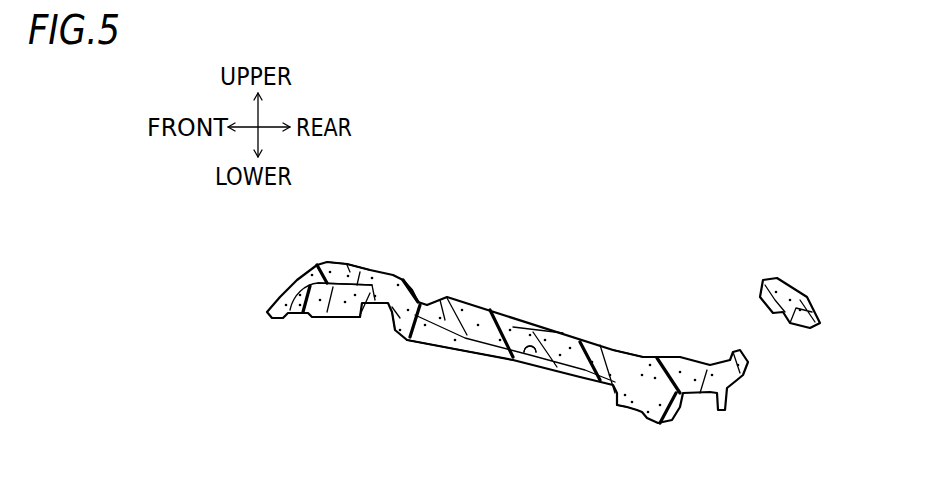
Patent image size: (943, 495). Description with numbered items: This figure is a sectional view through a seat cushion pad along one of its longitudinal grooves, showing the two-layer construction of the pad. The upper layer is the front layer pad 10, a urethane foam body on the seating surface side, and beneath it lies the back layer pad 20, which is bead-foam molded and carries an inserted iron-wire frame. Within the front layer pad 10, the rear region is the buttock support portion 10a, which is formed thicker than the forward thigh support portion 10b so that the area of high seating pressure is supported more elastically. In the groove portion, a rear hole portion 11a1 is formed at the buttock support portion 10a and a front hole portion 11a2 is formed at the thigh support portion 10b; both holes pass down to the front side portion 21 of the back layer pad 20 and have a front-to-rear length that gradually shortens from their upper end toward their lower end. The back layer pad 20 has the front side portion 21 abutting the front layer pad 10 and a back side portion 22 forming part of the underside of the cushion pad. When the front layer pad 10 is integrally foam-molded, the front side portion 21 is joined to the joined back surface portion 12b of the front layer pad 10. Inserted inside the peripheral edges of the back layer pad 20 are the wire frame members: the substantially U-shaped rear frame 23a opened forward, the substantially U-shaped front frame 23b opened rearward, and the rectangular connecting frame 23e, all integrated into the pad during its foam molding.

The front layer pad 10 is at (333, 258).
The buttock support portion 10a is at (563, 335).
The thigh support portion 10b is at (375, 263).
The rear hole portion 11a1 is at (628, 365).
The front hole portion 11a2 is at (418, 300).
The joined back surface portion 12b is at (480, 337).
The back layer pad 20 is at (430, 345).
The front side portion 21 is at (527, 352).
The back side portion 22 is at (630, 408).
The rear frame 23a is at (802, 327).
The front frame 23b is at (327, 296).
The connecting frame 23e is at (402, 320).